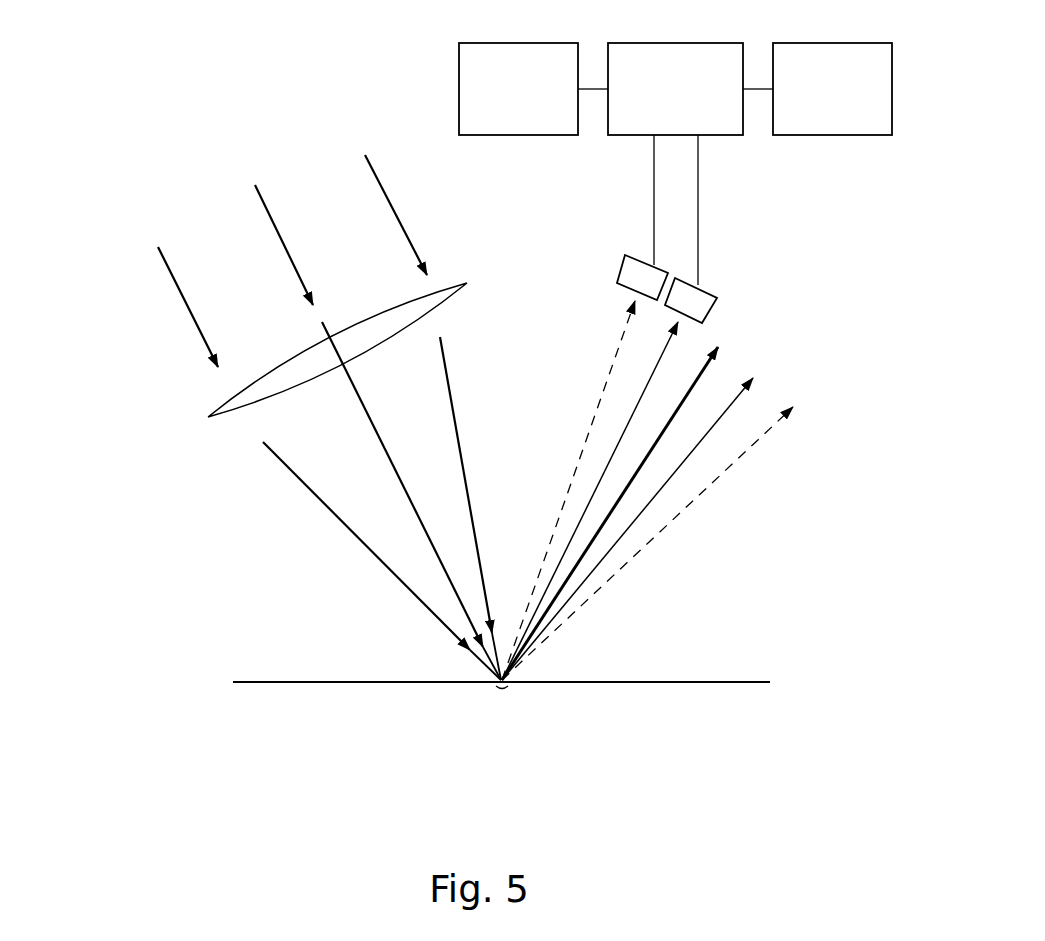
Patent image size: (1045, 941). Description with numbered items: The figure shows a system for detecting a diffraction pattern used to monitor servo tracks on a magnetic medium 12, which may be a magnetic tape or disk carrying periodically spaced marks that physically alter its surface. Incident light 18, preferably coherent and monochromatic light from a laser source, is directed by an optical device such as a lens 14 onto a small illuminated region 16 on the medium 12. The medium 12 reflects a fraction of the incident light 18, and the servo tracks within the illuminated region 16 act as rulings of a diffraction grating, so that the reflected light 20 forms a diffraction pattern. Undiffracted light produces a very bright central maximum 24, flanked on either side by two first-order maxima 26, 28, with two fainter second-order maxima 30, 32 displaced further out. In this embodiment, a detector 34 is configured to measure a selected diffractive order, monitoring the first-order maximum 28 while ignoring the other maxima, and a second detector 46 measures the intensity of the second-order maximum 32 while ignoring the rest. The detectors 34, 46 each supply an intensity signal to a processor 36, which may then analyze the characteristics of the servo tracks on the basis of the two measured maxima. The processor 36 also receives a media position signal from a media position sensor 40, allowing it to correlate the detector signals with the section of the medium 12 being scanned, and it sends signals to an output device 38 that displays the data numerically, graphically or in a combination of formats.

The magnetic medium 12 is at (307, 686).
The lens 14 is at (206, 417).
The illuminated region 16 is at (503, 697).
The incident light 18 is at (147, 325).
The reflected light 20 is at (690, 534).
The central maximum 24 is at (714, 364).
The first-order maximum 26 is at (742, 399).
The first-order maximum 28 is at (674, 340).
The second-order maximum 30 is at (786, 432).
The second-order maximum 32 is at (637, 318).
The detector 34 is at (712, 290).
The processor 36 is at (690, 89).
The output device 38 is at (533, 89).
The media position sensor 40 is at (832, 89).
The second detector 46 is at (622, 278).